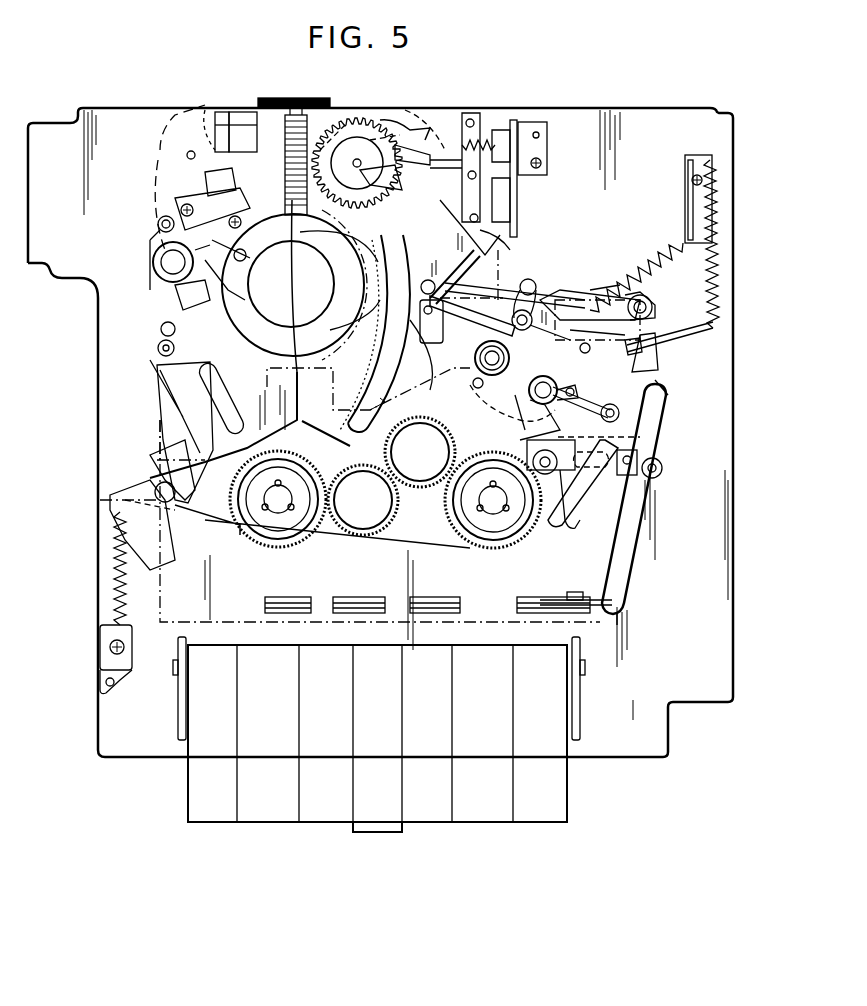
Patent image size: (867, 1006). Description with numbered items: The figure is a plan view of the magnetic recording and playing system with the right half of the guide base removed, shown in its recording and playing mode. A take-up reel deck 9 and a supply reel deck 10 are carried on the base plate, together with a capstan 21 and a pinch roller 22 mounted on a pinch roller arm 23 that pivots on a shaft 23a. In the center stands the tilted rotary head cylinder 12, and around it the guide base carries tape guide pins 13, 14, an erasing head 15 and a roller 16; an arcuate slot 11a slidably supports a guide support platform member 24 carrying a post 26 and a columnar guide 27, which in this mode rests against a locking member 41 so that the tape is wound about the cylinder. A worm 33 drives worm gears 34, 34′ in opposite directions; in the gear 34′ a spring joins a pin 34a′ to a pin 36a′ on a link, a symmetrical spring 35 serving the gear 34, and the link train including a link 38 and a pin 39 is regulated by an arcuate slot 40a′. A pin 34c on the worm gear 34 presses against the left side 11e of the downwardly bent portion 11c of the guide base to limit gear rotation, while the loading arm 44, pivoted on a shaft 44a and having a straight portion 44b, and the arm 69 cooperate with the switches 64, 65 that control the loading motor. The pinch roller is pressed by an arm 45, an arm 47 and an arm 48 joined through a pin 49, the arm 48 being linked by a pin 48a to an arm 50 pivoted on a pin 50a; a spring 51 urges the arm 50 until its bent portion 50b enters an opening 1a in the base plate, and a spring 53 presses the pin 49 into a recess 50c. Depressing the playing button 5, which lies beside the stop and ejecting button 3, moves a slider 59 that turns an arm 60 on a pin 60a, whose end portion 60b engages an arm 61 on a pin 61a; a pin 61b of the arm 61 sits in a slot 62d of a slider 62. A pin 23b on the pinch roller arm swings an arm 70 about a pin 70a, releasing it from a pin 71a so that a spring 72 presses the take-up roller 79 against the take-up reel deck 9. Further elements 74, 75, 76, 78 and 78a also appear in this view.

The opening 1a is at (648, 372).
The stop and ejecting button 3 is at (483, 818).
The playing button 5 is at (372, 825).
The take-up reel deck 9 is at (455, 462).
The supply reel deck 10 is at (300, 462).
The arcuate slot 11a is at (222, 384).
The downwardly bent portion 11c is at (240, 112).
The left side portion 11e is at (220, 136).
The rotary head cylinder 12 is at (257, 330).
The tape guide pin 13 is at (158, 372).
The tape guide pin 14 is at (160, 329).
The erasing head 15 is at (175, 300).
The roller 16 is at (160, 258).
The capstan 21 is at (472, 385).
The pinch roller 22 is at (490, 378).
The pinch roller arm 23 is at (530, 390).
The shaft 23a is at (522, 410).
The pin 23b is at (590, 400).
The guide support platform member 24 is at (258, 292).
The post 26 is at (228, 242).
The columnar guide 27 is at (212, 268).
The worm 33 is at (285, 165).
The worm gear 34 is at (195, 125).
The worm gear 34′ is at (392, 125).
The pin 34a′ is at (430, 135).
The pin 34c is at (222, 112).
The spring 35 is at (158, 150).
The pin 36a′ is at (280, 248).
The link 38 is at (365, 258).
The pin 39 is at (362, 286).
The arcuate slot 40a′ is at (380, 404).
The locking member 41 is at (230, 205).
The loading arm 44 is at (490, 255).
The shaft 44a is at (505, 245).
The straight portion 44b is at (400, 145).
The arm 45 is at (458, 290).
The arm 47 is at (443, 325).
The arm 48 is at (533, 282).
The pin 48a is at (560, 295).
The pin 49 is at (528, 330).
The arm 50 is at (580, 340).
The pin 50a is at (626, 345).
The bent portion 50b is at (650, 356).
The recess 50c is at (585, 290).
The spring 51 is at (715, 280).
The spring 53 is at (635, 272).
The slider 59 is at (568, 603).
The arm 60 is at (636, 548).
The pin 60a is at (662, 468).
The lever arm 60b is at (663, 400).
The arm 61 is at (652, 307).
The pin 61a is at (648, 296).
The pin 61b is at (392, 340).
The slider 62 is at (390, 320).
The slot 62d is at (418, 330).
The switch 64 is at (530, 122).
The switch 65 is at (507, 212).
The arm 69 is at (495, 130).
The arm 70 is at (538, 408).
The pin 70a is at (620, 413).
The pin 71a is at (622, 475).
The spring 72 is at (574, 442).
The pin 74 is at (158, 348).
The spring 75 is at (112, 575).
The belt 76 is at (232, 528).
The lever 78 is at (165, 475).
The roller 78a is at (155, 488).
The take-up roller 79 is at (527, 445).